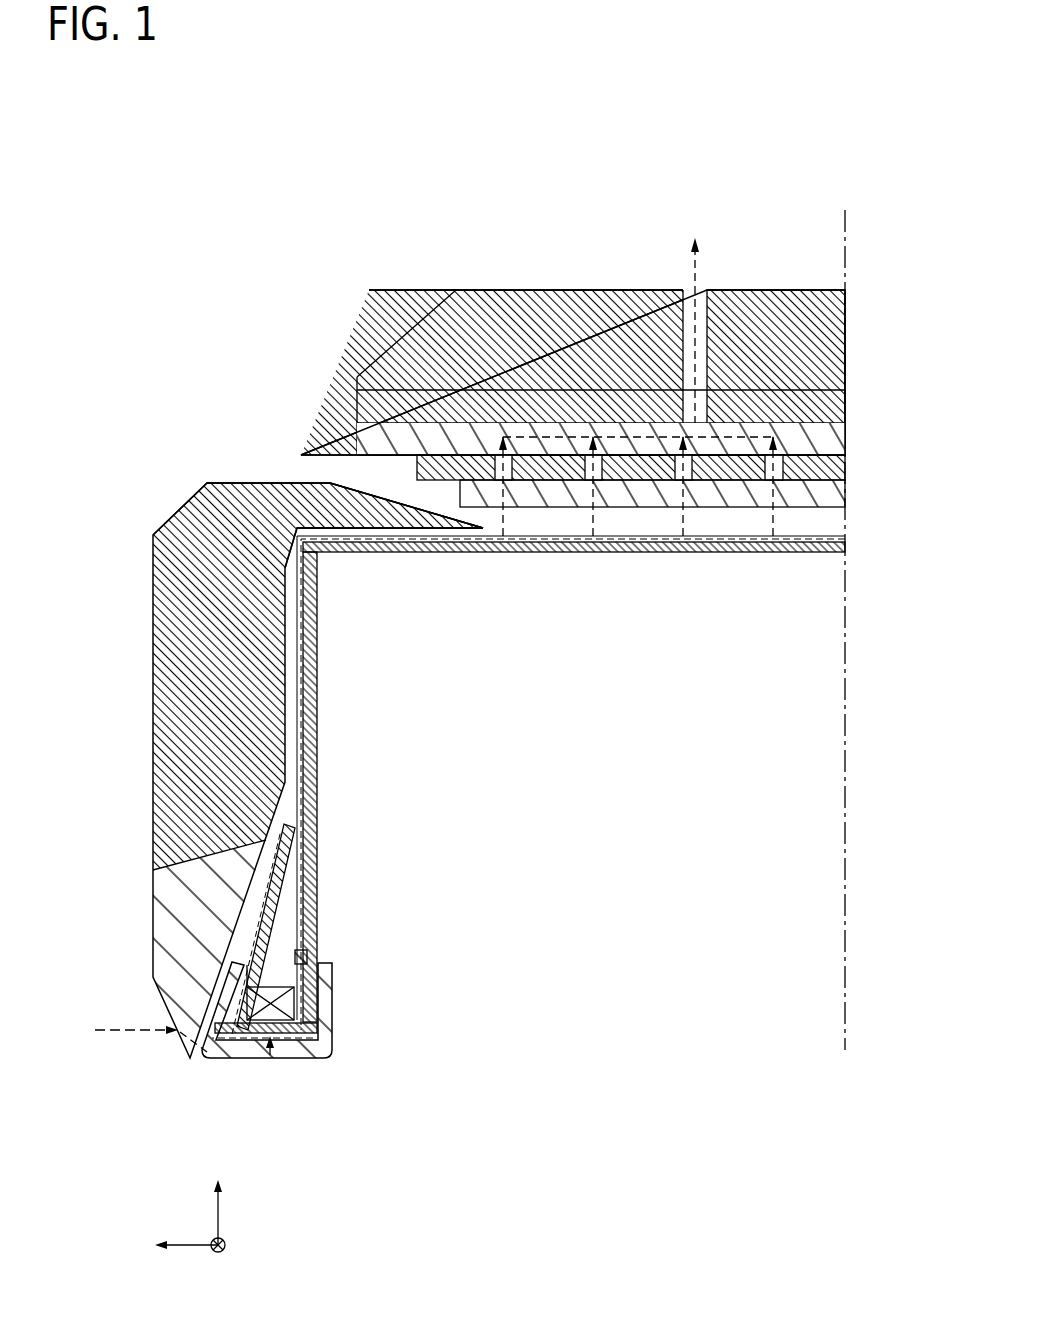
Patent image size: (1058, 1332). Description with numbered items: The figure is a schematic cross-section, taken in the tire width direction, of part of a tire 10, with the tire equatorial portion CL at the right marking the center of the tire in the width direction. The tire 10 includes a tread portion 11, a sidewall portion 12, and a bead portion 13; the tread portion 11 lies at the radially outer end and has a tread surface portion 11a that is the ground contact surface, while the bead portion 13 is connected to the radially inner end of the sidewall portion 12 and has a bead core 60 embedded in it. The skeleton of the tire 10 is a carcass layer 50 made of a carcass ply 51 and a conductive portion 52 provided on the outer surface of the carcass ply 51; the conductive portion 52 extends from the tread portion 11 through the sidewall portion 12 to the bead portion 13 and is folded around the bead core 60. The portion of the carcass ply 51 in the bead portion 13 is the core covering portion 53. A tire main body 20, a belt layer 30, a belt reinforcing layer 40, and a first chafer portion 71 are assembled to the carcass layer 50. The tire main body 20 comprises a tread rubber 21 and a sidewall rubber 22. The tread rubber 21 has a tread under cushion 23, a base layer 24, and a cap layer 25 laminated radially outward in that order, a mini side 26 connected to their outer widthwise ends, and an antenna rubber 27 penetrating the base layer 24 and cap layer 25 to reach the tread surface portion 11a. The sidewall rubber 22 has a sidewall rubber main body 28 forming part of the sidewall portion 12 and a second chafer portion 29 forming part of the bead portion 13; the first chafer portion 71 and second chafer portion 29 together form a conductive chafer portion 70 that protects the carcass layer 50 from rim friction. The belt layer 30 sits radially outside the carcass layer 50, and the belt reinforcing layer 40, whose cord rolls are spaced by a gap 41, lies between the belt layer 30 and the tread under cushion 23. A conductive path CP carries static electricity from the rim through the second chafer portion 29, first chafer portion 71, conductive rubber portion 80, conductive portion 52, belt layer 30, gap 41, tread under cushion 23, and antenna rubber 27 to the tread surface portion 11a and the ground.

The tire 10 is at (813, 166).
The tread portion 11 is at (478, 280).
The tread surface portion 11a is at (630, 290).
The sidewall portion 12 is at (128, 570).
The bead portion 13 is at (370, 942).
The tire main body 20 is at (285, 276).
The tread rubber 21 is at (345, 345).
The sidewall rubber 22 is at (243, 476).
The tread under cushion 23 is at (830, 440).
The base layer 24 is at (835, 410).
The cap layer 25 is at (555, 305).
The mini side 26 is at (395, 305).
The antenna rubber 27 is at (702, 315).
The sidewall rubber main body 28 is at (165, 716).
The second chafer portion 29 is at (165, 917).
The belt layer 30 is at (828, 495).
The belt reinforcing layer 40 is at (830, 465).
The gap 41 is at (688, 482).
The carcass layer 50 is at (570, 656).
The carcass ply 51 is at (540, 548).
The conductive portion 52 is at (455, 545).
The core covering portion 53 is at (320, 930).
The bead core 60 is at (280, 1017).
The chafer portion 70 is at (73, 880).
The first chafer portion 71 is at (232, 1006).
The conductive rubber portion 80 is at (333, 1001).
The conductive path CP is at (126, 1036).
The tire equatorial portion CL is at (843, 998).